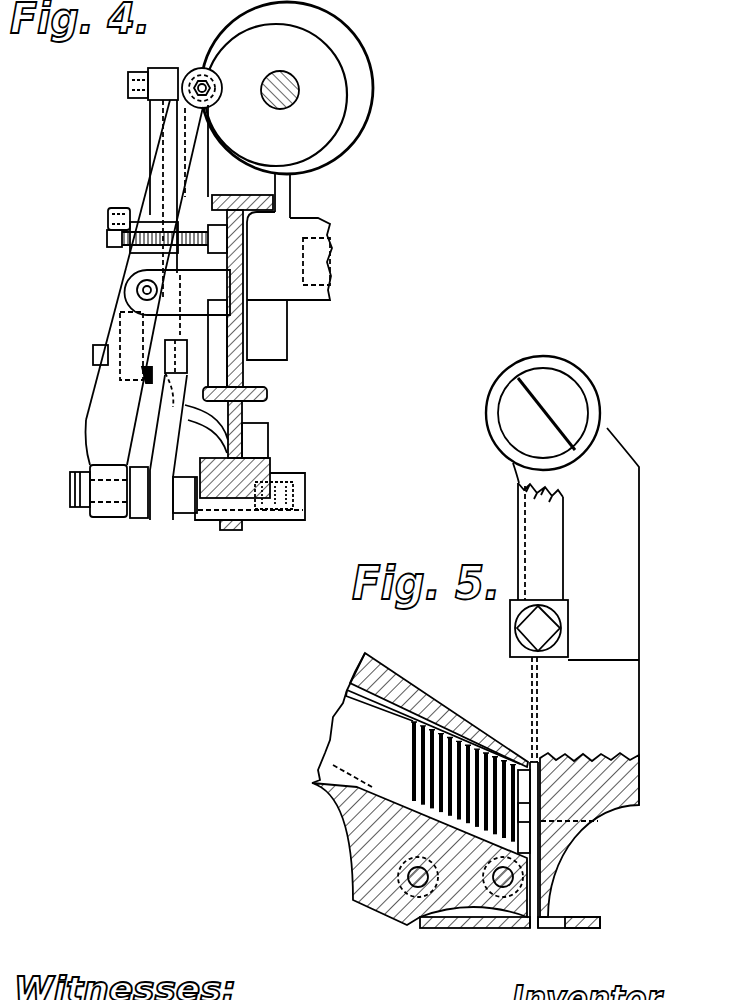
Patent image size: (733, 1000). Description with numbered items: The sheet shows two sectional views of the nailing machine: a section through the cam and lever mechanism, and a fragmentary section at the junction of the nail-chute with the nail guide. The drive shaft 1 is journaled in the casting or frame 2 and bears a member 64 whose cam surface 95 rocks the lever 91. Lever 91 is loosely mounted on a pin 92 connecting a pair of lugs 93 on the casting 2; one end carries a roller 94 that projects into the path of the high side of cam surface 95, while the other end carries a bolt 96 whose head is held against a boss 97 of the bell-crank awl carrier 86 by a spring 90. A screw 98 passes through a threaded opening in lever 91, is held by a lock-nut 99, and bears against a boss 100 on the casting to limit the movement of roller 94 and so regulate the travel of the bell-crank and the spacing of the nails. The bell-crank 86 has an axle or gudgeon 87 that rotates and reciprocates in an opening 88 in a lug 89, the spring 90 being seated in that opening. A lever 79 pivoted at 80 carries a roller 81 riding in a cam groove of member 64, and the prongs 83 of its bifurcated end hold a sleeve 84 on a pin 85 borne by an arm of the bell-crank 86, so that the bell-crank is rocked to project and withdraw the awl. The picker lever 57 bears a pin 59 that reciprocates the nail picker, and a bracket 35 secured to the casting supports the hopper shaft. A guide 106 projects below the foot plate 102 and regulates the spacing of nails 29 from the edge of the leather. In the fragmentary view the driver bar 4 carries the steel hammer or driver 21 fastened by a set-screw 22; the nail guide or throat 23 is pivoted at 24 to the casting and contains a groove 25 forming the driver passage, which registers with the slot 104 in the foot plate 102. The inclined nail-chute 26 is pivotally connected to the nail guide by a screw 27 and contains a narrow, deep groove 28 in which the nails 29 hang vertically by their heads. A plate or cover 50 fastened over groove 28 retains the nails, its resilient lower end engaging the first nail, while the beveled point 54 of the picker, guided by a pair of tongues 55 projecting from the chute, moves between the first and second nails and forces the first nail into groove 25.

In FIG. 4, the drive shaft 1 is at (299, 85).
In FIG. 4, the casting or frame 2 is at (290, 197).
In FIG. 4, the bracket 35 is at (336, 268).
In FIG. 4, the lever 57 is at (196, 420).
In FIG. 4, the pin 59 is at (220, 450).
In FIG. 4, the member 64 is at (276, 95).
In FIG. 4, the lever 79 is at (157, 150).
In FIG. 4, the pivot 80 is at (108, 213).
In FIG. 4, the roller 81 is at (200, 65).
In FIG. 4, the prongs 83 is at (160, 370).
In FIG. 4, the sleeve 84 is at (152, 360).
In FIG. 4, the pin 85 is at (100, 355).
In FIG. 4, the bell-crank awl carrier 86 is at (158, 449).
In FIG. 4, the axle or gudgeon 87 is at (185, 500).
In FIG. 4, the opening 88 is at (273, 477).
In FIG. 4, the lug 89 is at (305, 474).
In FIG. 4, the spring 90 is at (293, 497).
In FIG. 4, the lever 91 is at (126, 392).
In FIG. 4, the pin 92 is at (143, 292).
In FIG. 4, the lugs 93 is at (178, 292).
In FIG. 4, the roller 94 is at (216, 78).
In FIG. 4, the cam surface 95 is at (345, 131).
In FIG. 4, the bolt 96 is at (70, 494).
In FIG. 4, the boss 97 is at (140, 508).
In FIG. 4, the screw 98 is at (108, 238).
In FIG. 4, the lock-nut 99 is at (124, 247).
In FIG. 4, the boss 100 is at (224, 241).
In FIG. 4, the guide 106 is at (235, 528).
In FIG. 5, the rod or driver bar 4 is at (543, 543).
In FIG. 5, the hammer or driver 21 is at (529, 763).
In FIG. 5, the set-screw 22 is at (544, 627).
In FIG. 5, the nail guide or throat 23 is at (576, 616).
In FIG. 5, the pivot 24 is at (568, 403).
In FIG. 5, the groove 25 is at (553, 852).
In FIG. 5, the nail-chute or raceway 26 is at (338, 790).
In FIG. 5, the screw 27 is at (513, 878).
In FIG. 5, the groove or driver passage 28 is at (424, 782).
In FIG. 5, the nails 29 is at (413, 737).
In FIG. 5, the plate or cover 50 is at (408, 674).
In FIG. 5, the beveled point 54 is at (527, 783).
In FIG. 5, the tongues 55 is at (523, 815).
In FIG. 5, the foot plate 102 is at (585, 917).
In FIG. 5, the slot 104 is at (552, 929).